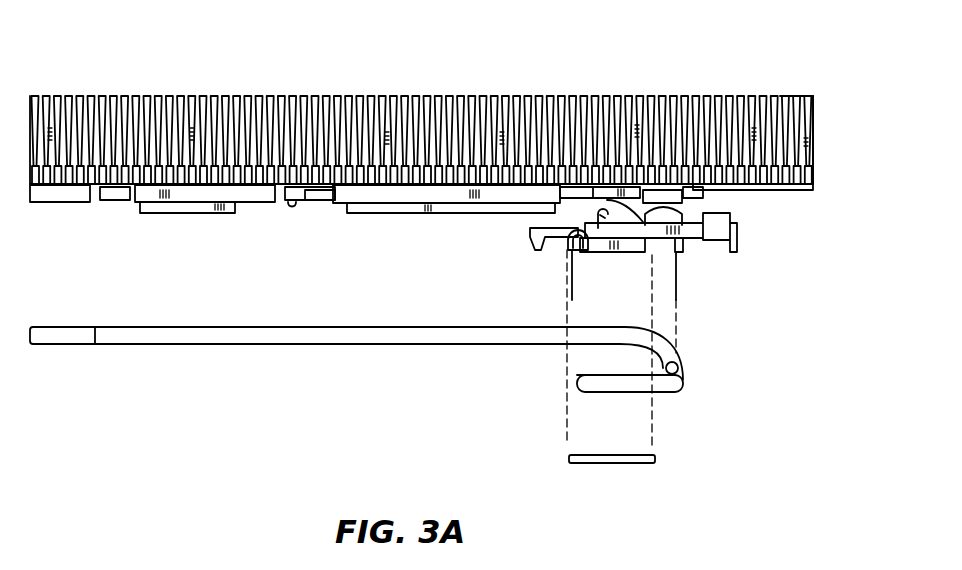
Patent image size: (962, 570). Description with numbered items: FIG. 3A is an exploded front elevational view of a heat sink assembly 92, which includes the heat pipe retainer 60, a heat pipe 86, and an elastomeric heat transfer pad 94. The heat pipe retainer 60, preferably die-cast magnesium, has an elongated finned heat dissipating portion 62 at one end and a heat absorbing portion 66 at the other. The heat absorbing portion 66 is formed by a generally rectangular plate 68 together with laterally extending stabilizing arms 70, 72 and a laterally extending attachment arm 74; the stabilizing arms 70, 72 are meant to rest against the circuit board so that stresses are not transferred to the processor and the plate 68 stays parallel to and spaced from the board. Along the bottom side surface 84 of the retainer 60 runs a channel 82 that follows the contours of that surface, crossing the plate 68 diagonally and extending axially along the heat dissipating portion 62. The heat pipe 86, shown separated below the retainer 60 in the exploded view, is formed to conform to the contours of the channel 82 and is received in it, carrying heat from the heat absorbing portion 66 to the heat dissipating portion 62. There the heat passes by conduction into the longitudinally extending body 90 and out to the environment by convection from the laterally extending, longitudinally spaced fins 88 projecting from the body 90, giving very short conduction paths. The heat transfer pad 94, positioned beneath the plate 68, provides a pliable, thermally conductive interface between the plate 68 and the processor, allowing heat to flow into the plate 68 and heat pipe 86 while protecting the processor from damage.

The heat pipe retainer 60 is at (165, 90).
The heat dissipating portion 62 is at (525, 90).
The heat absorbing portion 66 is at (588, 248).
The plate 68 is at (676, 272).
The stabilizing arm 70 is at (528, 228).
The stabilizing arm 72 is at (742, 233).
The attachment arm 74 is at (716, 210).
The channel 82 is at (568, 265).
The bottom side surface 84 is at (313, 203).
The heat pipe 86 is at (197, 345).
The fins 88 is at (318, 96).
The body 90 is at (815, 135).
The heat sink assembly 92 is at (786, 76).
The heat transfer pad 94 is at (648, 463).